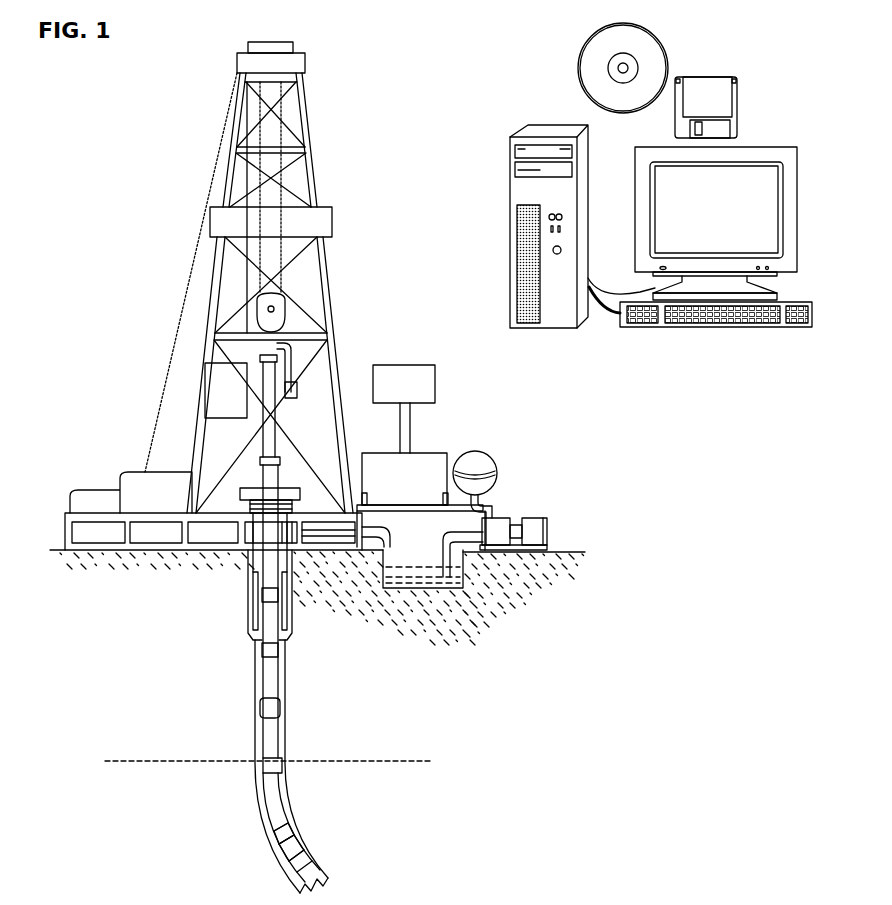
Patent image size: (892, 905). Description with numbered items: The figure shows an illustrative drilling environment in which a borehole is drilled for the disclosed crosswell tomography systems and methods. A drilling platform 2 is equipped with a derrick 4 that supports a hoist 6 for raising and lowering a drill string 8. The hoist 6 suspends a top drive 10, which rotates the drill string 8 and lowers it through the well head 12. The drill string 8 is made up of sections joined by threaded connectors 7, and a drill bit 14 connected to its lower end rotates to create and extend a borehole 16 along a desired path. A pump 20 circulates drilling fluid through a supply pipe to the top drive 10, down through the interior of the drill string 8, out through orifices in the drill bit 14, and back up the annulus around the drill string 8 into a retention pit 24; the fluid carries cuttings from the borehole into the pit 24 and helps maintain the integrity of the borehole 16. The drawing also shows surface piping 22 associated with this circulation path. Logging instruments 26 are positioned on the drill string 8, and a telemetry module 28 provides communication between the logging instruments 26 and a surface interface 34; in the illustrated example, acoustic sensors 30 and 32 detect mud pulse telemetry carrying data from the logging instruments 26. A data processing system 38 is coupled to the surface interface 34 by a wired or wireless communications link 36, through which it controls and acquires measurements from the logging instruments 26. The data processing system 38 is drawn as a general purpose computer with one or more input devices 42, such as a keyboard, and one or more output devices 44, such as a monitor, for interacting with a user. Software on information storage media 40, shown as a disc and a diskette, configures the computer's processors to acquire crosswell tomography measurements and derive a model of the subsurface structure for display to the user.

The drilling platform 2 is at (65, 524).
The derrick 4 is at (312, 175).
The hoist 6 is at (280, 303).
The threaded connectors 7 is at (262, 648).
The drill string 8 is at (279, 670).
The top drive 10 is at (283, 379).
The well head 12 is at (250, 487).
The drill bit 14 is at (308, 862).
The borehole 16 is at (286, 688).
The pump 20 is at (497, 523).
The mud pump 22 is at (463, 513).
The retention pit 24 is at (407, 573).
The logging instruments 26 is at (260, 710).
The telemetry module 28 is at (282, 825).
The acoustic sensor 30 is at (375, 486).
The acoustic sensor 32 is at (443, 496).
The surface interface 34 is at (404, 385).
The communications link 36 is at (450, 337).
The data processing system 38 is at (586, 249).
The information storage media 40 is at (692, 77).
The input devices 42 is at (788, 326).
The output devices 44 is at (784, 272).